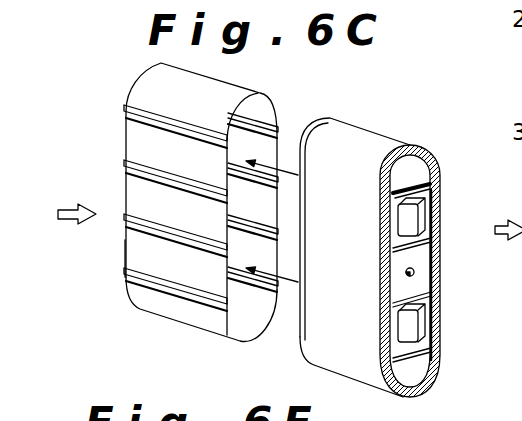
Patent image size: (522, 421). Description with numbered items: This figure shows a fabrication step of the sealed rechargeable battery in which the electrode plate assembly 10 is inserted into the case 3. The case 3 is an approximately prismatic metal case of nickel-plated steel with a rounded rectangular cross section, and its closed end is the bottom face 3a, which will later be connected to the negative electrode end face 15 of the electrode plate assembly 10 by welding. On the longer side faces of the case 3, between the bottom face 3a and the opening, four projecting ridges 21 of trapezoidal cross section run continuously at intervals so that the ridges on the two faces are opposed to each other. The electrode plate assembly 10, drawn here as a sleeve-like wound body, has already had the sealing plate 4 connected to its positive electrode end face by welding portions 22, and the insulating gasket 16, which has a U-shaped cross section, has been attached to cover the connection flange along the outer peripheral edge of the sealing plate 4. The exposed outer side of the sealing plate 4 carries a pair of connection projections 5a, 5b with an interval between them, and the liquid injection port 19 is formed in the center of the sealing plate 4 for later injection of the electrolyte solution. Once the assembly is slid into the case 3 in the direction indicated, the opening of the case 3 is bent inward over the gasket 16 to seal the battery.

The case 3 is at (173, 318).
The bottom face of the case 3a is at (122, 252).
The projecting ridges 21 is at (147, 122).
The negative electrode end face 15 is at (298, 338).
The electrode plate assembly 10 is at (326, 269).
The sealing plate 4 is at (441, 166).
The gasket 16 is at (413, 172).
The connection projection 5a is at (418, 216).
The connection projection 5b is at (418, 322).
The welding portions 22 is at (420, 243).
The liquid injection port 19 is at (418, 271).